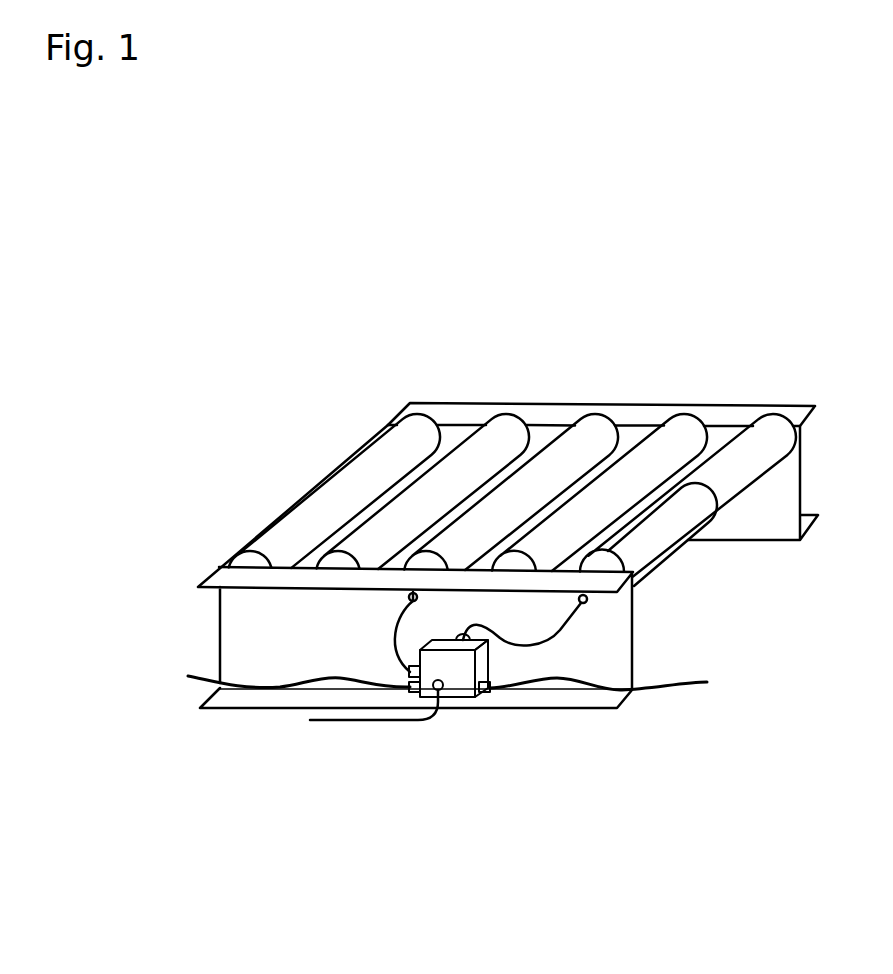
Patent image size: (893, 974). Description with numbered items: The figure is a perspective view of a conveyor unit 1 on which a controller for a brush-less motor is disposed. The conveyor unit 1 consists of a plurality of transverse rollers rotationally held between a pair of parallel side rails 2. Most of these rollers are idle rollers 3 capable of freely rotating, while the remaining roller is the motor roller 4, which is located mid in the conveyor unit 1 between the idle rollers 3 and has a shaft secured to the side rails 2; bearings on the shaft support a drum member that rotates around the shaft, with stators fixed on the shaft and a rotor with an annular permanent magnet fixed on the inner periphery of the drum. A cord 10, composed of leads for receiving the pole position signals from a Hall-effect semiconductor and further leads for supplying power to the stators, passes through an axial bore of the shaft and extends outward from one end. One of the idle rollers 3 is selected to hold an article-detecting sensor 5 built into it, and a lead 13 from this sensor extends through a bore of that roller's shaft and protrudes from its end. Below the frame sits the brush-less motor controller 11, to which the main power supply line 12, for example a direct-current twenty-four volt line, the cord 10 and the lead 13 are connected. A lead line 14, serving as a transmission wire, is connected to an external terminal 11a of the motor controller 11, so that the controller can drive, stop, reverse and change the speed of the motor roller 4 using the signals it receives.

The conveyor unit 1 is at (276, 456).
The side rail 2 is at (547, 412).
The idle roller 3 is at (417, 427).
The motor roller 4 is at (590, 432).
The article-detecting sensor 5 is at (707, 520).
The cord 10 is at (383, 628).
The brush-less motor controller 11 is at (469, 698).
The external terminal 11a is at (439, 700).
The main power supply line 12 is at (191, 680).
The lead 13 is at (538, 645).
The lead line 14 is at (395, 722).